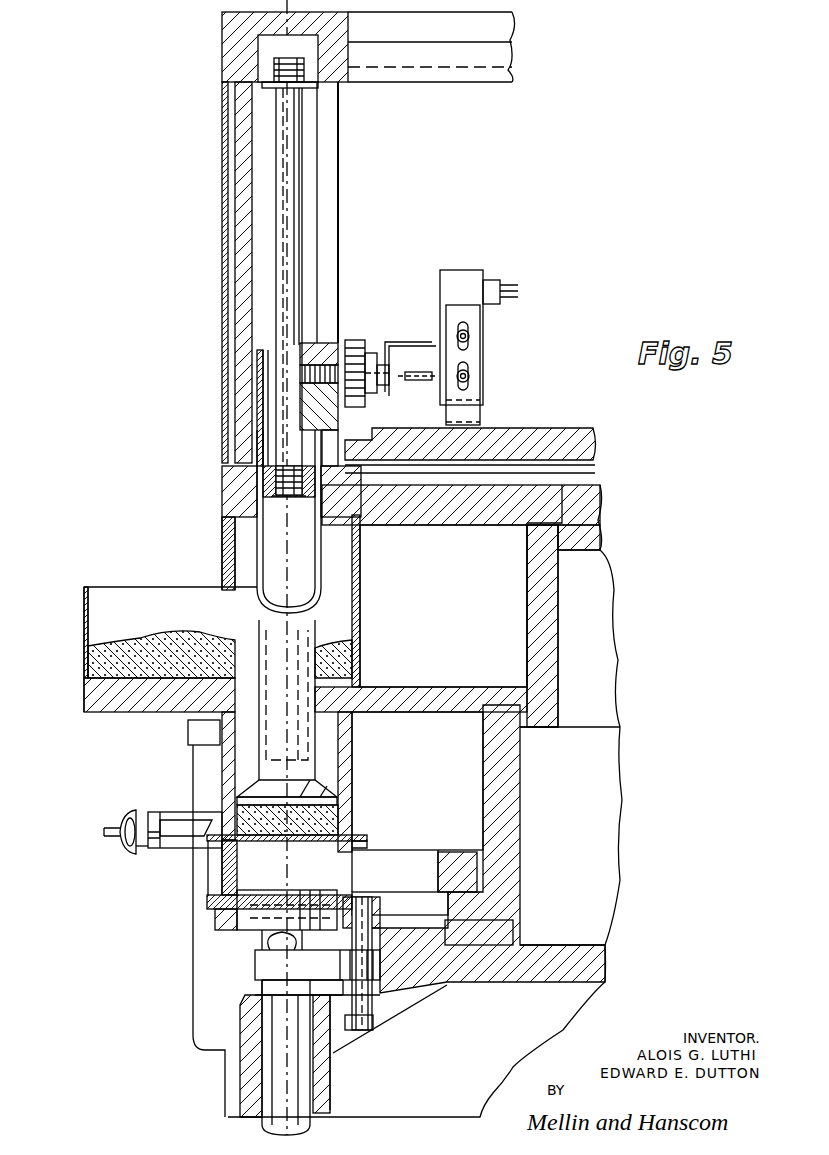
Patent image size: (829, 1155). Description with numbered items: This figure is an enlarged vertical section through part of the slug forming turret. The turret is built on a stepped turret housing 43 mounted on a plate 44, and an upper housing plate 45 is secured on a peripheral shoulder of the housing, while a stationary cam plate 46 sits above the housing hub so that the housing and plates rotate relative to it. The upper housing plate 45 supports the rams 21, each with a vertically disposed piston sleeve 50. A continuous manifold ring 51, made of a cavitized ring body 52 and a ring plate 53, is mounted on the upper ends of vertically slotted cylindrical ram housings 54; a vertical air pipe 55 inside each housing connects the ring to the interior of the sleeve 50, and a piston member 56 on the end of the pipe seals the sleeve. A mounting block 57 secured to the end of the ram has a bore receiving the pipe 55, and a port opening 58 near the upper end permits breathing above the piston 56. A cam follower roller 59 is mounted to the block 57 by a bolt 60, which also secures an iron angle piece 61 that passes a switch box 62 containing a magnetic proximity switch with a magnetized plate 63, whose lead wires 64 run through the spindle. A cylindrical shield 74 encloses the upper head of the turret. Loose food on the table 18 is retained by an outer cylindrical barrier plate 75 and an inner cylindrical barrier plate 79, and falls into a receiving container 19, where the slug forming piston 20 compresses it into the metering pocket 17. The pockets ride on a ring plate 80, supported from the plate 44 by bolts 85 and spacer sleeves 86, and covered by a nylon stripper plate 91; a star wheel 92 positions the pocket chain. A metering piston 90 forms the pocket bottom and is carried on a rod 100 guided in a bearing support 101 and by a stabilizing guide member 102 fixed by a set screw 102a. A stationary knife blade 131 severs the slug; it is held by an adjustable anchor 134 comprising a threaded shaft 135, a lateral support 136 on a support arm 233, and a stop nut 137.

The metering pocket 17 is at (352, 840).
The table 18 is at (416, 682).
The receiving container 19 is at (352, 739).
The slug forming piston 20 is at (340, 790).
The ram 21 is at (222, 212).
The stepped turret housing 43 is at (527, 634).
The plate 44 is at (440, 990).
The upper housing plate 45 is at (452, 525).
The stationary cam plate 46 is at (545, 432).
The piston sleeve 50 is at (257, 558).
The continuous manifold ring 51 is at (222, 28).
The cavitized ring body 52 is at (340, 50).
The ring plate 53 is at (350, 14).
The cylindrical ram housing 54 is at (240, 128).
The vertical air pipe 55 is at (300, 230).
The piston member 56 is at (272, 498).
The mounting block 57 is at (330, 345).
The port opening 58 is at (318, 444).
The cam follower roller 59 is at (365, 350).
The bolt 60 is at (316, 343).
The angle piece 61 is at (432, 348).
The switch box 62 is at (470, 275).
The magnetized plate 63 is at (430, 383).
The lead wires 64 is at (518, 288).
The cylindrical shield 74 is at (222, 285).
The cylindrical barrier plate 75 is at (84, 610).
The cylindrical barrier plate 79 is at (360, 569).
The ring plate 80 is at (222, 920).
The bolt 85 is at (372, 1028).
The spacer sleeve 86 is at (376, 935).
The metering piston 90 is at (287, 920).
The nylon stripper plate 91 is at (372, 897).
The star wheel 92 is at (462, 852).
The rod 100 is at (275, 1125).
The bearing support 101 is at (245, 1072).
The stabilizing guide member 102 is at (255, 960).
The set screw 102a is at (255, 977).
The stationary knife blade 131 is at (212, 812).
The adjustable anchor 134 is at (122, 810).
The threaded shaft 135 is at (104, 834).
The lateral support 136 is at (170, 852).
The stop nut 137 is at (124, 856).
The support arm 233 is at (190, 752).